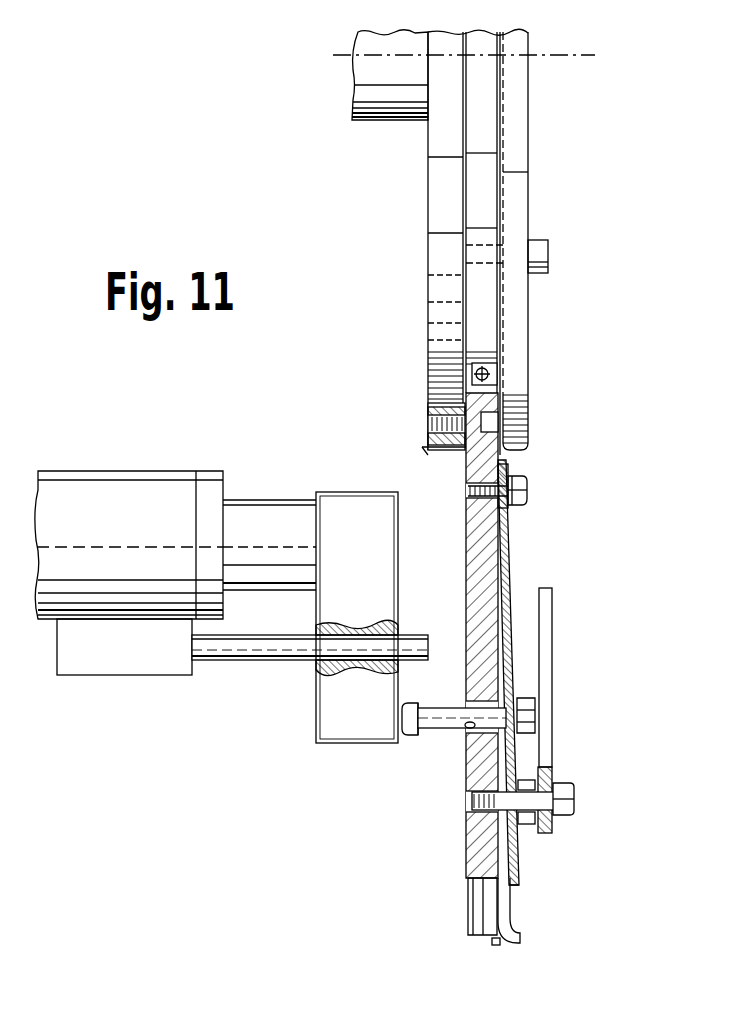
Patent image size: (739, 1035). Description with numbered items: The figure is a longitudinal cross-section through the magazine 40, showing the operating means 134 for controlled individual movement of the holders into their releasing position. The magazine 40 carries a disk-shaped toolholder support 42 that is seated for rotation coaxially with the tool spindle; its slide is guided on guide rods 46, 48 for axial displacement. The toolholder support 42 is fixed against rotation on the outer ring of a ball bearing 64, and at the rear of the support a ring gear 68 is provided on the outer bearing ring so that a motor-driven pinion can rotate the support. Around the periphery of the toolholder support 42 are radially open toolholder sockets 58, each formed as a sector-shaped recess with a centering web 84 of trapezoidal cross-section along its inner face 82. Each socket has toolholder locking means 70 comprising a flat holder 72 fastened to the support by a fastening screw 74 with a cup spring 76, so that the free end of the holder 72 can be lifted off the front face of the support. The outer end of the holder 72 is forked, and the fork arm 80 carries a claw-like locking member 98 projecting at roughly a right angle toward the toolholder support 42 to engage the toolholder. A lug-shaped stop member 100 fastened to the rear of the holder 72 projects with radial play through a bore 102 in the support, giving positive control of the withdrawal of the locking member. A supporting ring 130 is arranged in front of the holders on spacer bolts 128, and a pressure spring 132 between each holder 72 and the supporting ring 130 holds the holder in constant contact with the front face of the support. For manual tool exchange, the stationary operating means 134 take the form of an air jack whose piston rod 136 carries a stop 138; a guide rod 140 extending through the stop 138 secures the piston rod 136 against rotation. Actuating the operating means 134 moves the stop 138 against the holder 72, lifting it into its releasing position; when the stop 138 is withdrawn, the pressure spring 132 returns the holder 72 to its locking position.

The magazine 40 is at (556, 325).
The toolholder support 42 is at (478, 534).
The guide rod 46 is at (370, 107).
The guide rod 48 is at (373, 105).
The toolholder socket 58 is at (480, 940).
The ball bearing 64 is at (498, 374).
The ring gear 68 is at (430, 451).
The toolholder locking means 70 is at (535, 671).
The holder 72 is at (508, 640).
The fastening screw 74 is at (518, 490).
The cup spring 76 is at (511, 516).
The fork arm 80 is at (517, 903).
The inner face 82 is at (512, 893).
The centering web 84 is at (477, 887).
The locking member 98 is at (497, 943).
The stop member 100 is at (440, 711).
The bore 102 is at (464, 727).
The spacer bolt 128 is at (575, 797).
The supporting ring 130 is at (552, 770).
The pressure spring 132 is at (530, 822).
The operating means 134 is at (100, 462).
The piston rod 136 is at (261, 520).
The stop 138 is at (350, 723).
The guide rod 140 is at (232, 650).